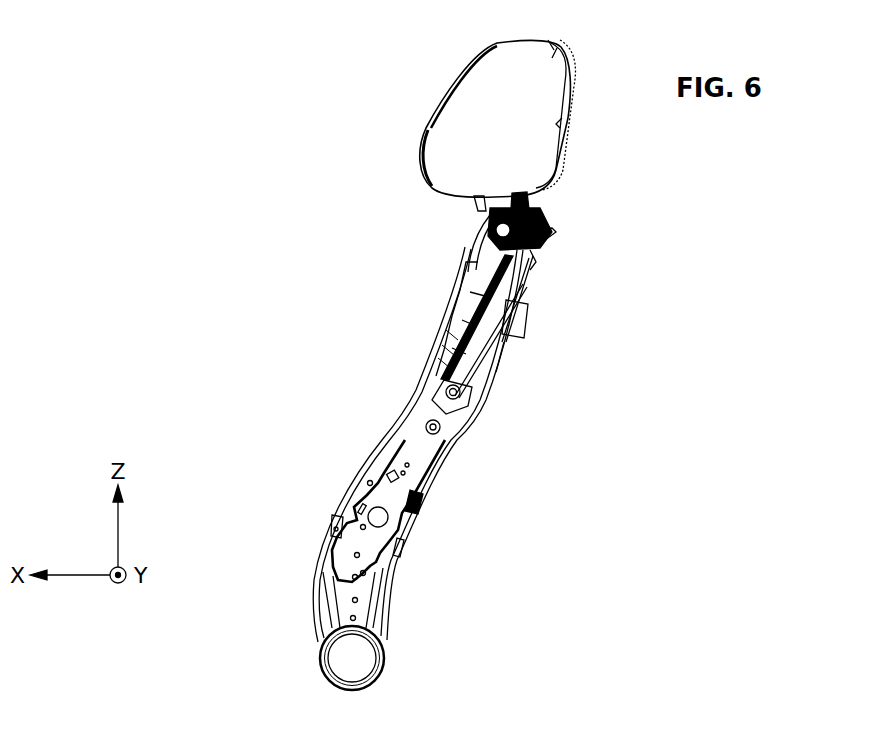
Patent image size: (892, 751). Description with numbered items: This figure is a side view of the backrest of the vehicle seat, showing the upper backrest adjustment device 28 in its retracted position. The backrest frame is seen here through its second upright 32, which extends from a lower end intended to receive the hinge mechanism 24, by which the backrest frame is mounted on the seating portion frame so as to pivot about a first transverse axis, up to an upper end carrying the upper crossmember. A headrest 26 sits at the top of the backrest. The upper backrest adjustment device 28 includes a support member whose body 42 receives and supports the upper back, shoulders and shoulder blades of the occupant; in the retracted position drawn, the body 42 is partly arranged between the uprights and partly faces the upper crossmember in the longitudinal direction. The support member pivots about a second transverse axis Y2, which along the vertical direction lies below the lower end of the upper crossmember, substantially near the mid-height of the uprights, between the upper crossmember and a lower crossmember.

The hinge mechanism 24 is at (370, 661).
The headrest 26 is at (435, 162).
The upper backrest adjustment device 28 is at (378, 274).
The second upright 32 is at (420, 500).
The body 42 is at (478, 280).
The second transverse axis Y2 is at (414, 390).